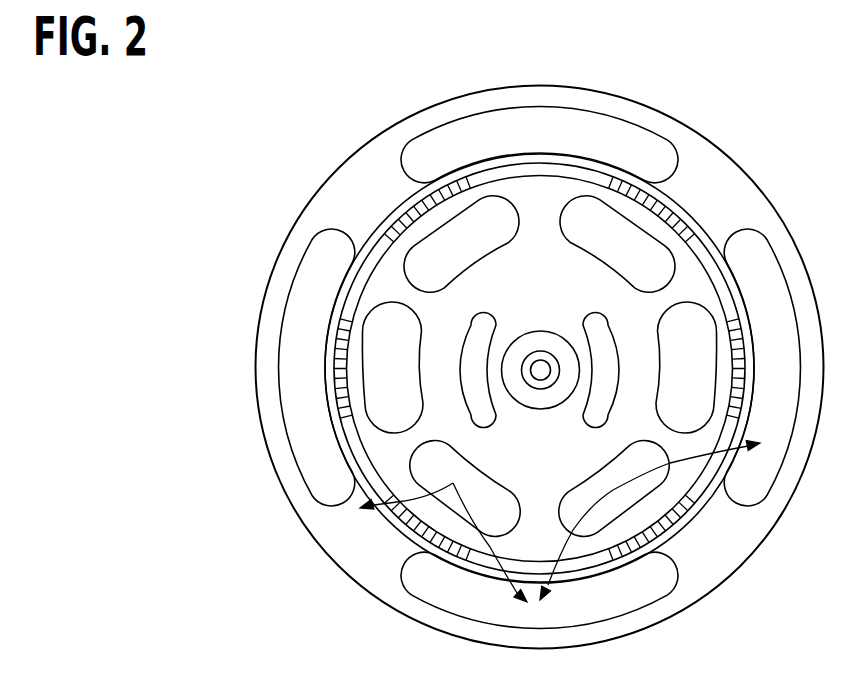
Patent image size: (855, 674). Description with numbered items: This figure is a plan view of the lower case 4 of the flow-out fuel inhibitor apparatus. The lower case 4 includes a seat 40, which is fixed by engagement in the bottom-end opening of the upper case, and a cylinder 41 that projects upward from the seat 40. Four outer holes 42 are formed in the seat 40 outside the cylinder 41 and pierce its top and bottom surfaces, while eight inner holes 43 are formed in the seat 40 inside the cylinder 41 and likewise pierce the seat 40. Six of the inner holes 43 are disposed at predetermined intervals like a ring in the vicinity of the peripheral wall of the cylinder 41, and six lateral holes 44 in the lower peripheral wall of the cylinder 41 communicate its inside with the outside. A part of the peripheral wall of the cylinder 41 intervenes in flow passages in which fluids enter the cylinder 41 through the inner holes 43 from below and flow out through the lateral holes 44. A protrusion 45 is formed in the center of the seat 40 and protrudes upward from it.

The lower case 4 is at (713, 120).
The seat 40 is at (717, 195).
The cylinder 41 is at (680, 513).
The outer holes 42 is at (555, 125).
The inner holes 43 is at (475, 230).
The lateral holes 44 is at (352, 501).
The protrusion 45 is at (543, 362).